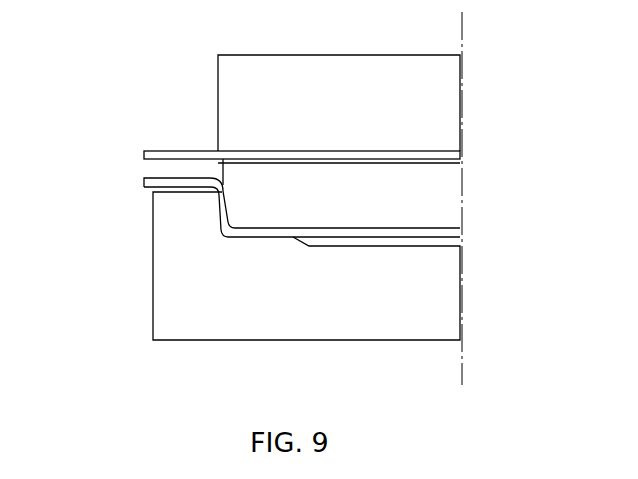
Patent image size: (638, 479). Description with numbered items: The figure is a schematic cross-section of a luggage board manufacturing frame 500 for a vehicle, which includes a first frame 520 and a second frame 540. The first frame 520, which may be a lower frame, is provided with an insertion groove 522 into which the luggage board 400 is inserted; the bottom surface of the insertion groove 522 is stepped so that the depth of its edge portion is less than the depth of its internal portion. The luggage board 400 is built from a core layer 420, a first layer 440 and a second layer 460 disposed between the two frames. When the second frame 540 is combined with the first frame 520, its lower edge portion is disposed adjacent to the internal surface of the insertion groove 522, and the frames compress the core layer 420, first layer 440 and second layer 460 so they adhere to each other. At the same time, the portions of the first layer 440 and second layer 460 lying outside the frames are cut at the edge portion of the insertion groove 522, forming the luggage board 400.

The luggage board 400 is at (84, 138).
The core layer 420 is at (243, 198).
The first layer 440 is at (220, 212).
The second layer 460 is at (162, 157).
The luggage board manufacturing frame 500 is at (524, 102).
The first frame 520 is at (440, 285).
The insertion groove 522 is at (218, 233).
The second frame 540 is at (440, 103).